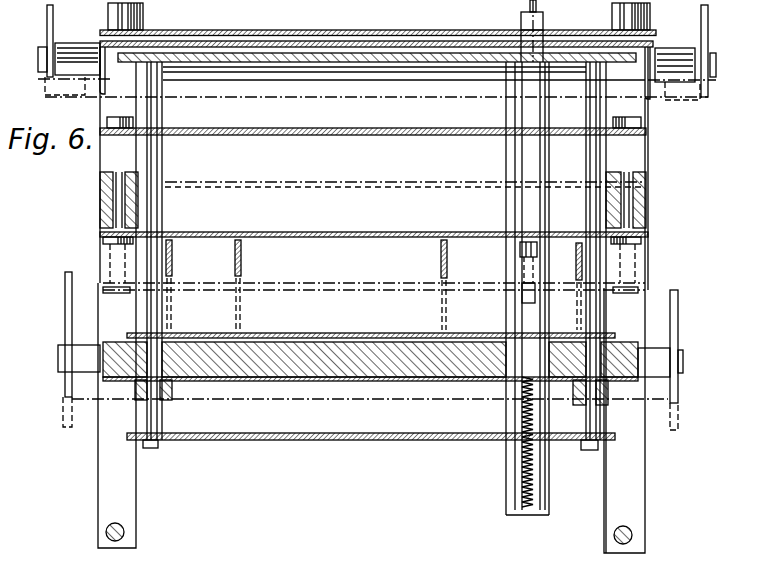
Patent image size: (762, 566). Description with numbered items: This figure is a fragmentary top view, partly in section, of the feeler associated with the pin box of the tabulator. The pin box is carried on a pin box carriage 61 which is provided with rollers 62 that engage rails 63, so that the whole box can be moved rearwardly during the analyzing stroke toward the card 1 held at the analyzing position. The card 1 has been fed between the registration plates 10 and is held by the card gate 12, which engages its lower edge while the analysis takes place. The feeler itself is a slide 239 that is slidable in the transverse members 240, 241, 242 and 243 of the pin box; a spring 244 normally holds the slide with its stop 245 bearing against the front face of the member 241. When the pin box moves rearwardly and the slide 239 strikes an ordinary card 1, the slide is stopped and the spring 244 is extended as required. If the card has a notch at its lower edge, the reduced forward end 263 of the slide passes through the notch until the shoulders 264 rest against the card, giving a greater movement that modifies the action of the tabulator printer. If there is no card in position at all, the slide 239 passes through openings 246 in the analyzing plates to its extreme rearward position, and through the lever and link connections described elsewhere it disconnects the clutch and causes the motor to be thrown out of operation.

The card 1 is at (239, 52).
The registration plates 10 is at (304, 52).
The card gate 12 is at (77, 44).
The pin box carriage 61 is at (100, 208).
The rollers 62 is at (636, 478).
The rails 63 is at (128, 497).
The slide 239 is at (516, 258).
The transverse member 240 is at (409, 367).
The transverse member 241 is at (402, 238).
The transverse member 242 is at (456, 136).
The transverse member 243 is at (385, 438).
The spring 244 is at (518, 490).
The stop 245 is at (525, 288).
The openings 246 is at (541, 45).
The reduced forward end 263 is at (528, 85).
The shoulders 264 is at (535, 100).